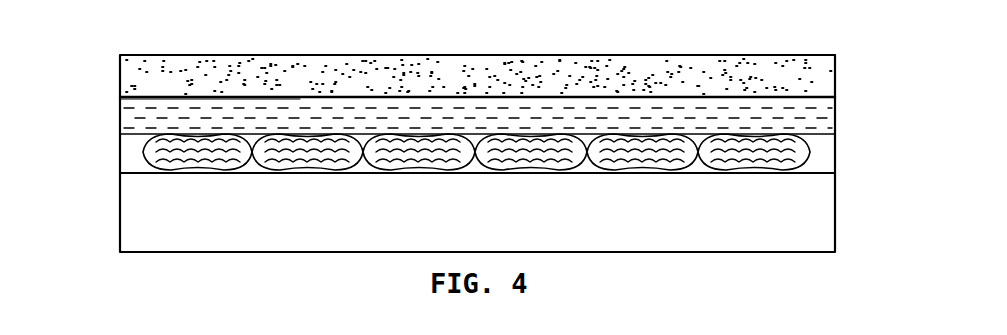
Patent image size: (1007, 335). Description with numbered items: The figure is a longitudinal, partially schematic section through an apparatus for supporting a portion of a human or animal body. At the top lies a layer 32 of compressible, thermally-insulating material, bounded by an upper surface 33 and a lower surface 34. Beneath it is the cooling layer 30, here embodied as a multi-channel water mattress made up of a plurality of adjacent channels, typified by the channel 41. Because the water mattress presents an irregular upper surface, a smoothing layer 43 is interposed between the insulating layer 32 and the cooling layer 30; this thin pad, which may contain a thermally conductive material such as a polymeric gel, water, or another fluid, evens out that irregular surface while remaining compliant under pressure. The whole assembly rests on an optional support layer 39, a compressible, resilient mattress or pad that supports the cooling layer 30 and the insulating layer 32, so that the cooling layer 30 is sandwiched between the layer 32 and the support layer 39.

The cooling layer 30 is at (472, 159).
The layer of compressible, thermally-insulating material 32 is at (843, 55).
The upper surface 33 is at (785, 55).
The lower surface 34 is at (133, 98).
The support layer 39 is at (843, 173).
The channel 41 is at (147, 151).
The smoothing layer 43 is at (843, 97).